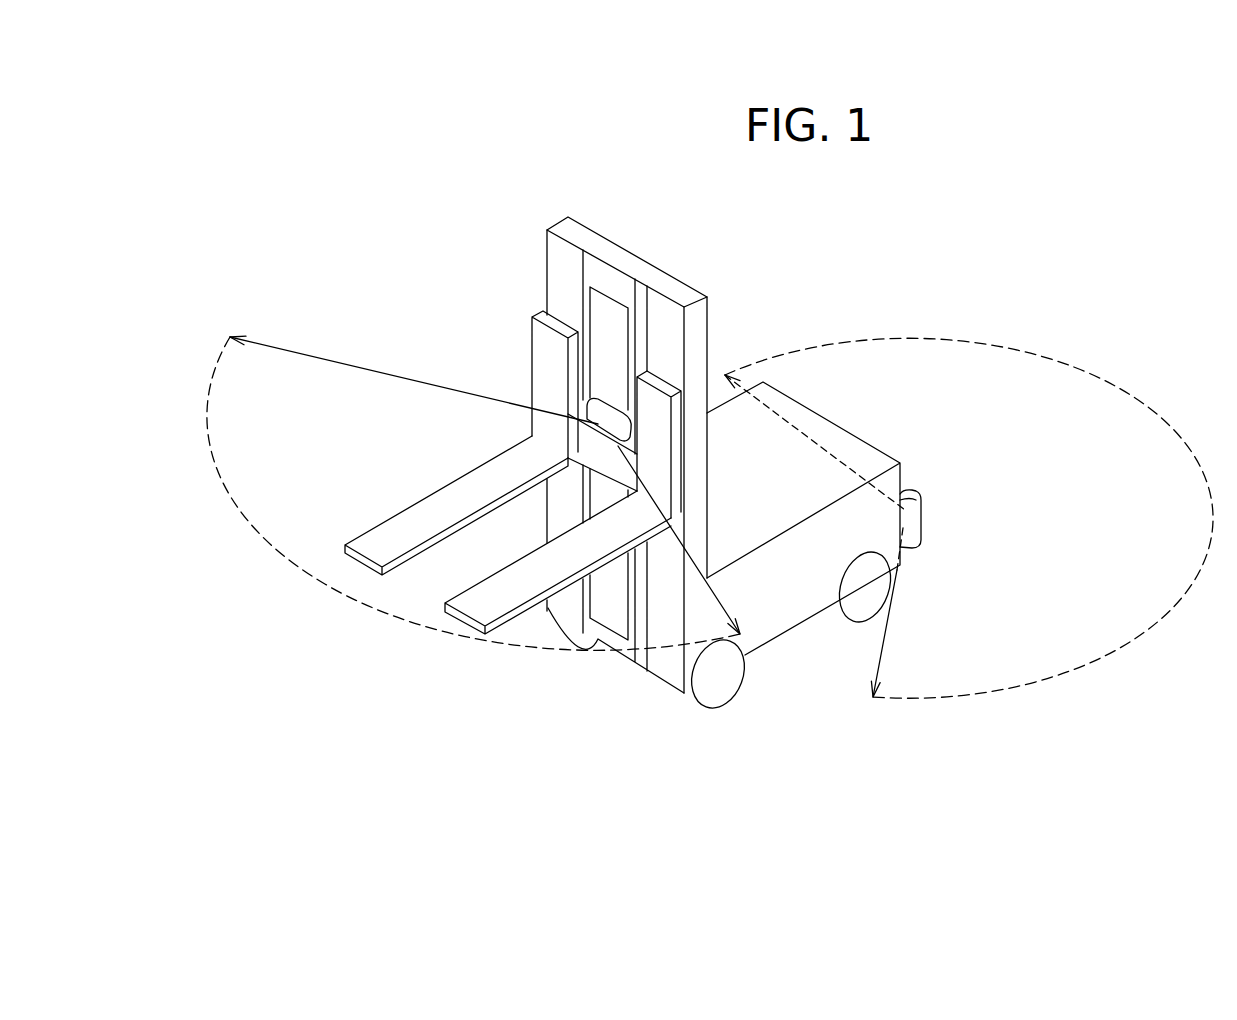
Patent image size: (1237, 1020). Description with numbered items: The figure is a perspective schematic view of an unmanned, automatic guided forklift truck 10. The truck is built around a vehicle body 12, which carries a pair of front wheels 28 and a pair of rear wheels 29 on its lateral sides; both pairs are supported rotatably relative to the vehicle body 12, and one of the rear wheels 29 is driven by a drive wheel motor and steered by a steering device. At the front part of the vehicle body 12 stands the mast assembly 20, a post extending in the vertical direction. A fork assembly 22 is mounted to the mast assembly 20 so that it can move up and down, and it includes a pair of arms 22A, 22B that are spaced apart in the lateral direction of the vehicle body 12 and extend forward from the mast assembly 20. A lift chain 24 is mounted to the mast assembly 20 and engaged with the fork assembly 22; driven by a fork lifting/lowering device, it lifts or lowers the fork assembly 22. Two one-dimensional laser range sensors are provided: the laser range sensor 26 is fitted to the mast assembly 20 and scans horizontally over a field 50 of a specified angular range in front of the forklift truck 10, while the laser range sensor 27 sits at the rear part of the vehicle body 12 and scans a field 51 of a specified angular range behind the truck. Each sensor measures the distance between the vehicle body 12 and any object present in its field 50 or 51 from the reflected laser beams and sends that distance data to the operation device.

The forklift truck 10 is at (253, 224).
The vehicle body 12 is at (817, 422).
The mast assembly 20 is at (665, 663).
The fork assembly 22 is at (437, 302).
The arm 22A is at (440, 510).
The arm 22B is at (527, 578).
The lift chain 24 is at (585, 252).
The laser range sensor 26 is at (632, 443).
The laser range sensor 27 is at (922, 518).
The front wheels 28 is at (720, 682).
The rear wheels 29 is at (870, 595).
The field 50 is at (272, 548).
The field 51 is at (908, 337).